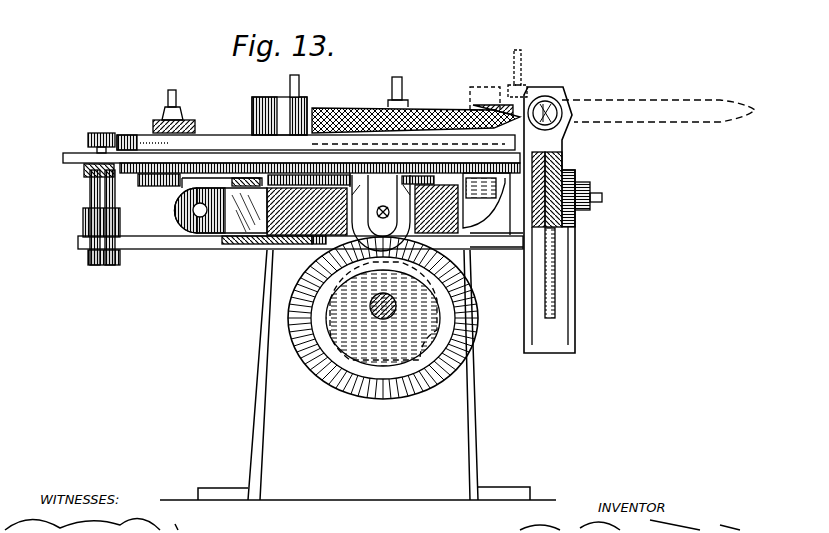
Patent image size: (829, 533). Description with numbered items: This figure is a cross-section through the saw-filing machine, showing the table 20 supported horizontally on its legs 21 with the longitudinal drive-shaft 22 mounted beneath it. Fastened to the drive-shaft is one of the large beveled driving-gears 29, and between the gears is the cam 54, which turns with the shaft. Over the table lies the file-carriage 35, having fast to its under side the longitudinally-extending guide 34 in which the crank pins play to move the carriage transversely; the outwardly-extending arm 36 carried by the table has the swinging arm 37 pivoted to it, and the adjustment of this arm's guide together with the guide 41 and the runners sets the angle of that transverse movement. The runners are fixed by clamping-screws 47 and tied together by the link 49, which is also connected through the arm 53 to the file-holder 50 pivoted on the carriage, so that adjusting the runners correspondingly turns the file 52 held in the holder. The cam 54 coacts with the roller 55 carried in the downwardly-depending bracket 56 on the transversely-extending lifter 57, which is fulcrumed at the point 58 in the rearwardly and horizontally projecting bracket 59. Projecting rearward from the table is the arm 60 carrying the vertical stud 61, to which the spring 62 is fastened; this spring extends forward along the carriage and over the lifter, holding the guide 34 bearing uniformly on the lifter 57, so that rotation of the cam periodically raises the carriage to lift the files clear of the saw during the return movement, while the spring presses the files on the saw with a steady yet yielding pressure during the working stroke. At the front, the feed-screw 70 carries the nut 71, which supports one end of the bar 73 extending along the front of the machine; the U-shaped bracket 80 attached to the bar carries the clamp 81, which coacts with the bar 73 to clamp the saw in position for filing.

The table 20 is at (268, 250).
The legs 21 is at (474, 418).
The drive-shaft 22 is at (385, 310).
The beveled driving-gear 29 is at (350, 334).
The guide 34 is at (245, 160).
The file-carriage 35 is at (203, 140).
The arm 36 is at (512, 252).
The swinging arm 37 is at (489, 246).
The guide 41 is at (157, 180).
The clamping-screw 47 is at (168, 95).
The link 49 is at (152, 118).
The file-holder 50 is at (277, 106).
The file 52 is at (434, 107).
The arm 53 is at (203, 132).
The cam 54 is at (330, 370).
The roller 55 is at (305, 270).
The bracket 56 is at (381, 213).
The lifter 57 is at (489, 195).
The fulcrum point 58 is at (194, 211).
The bracket 59 is at (228, 218).
The arm 60 is at (153, 252).
The stud 61 is at (100, 197).
The spring 62 is at (125, 178).
The feed-screw 70 is at (552, 108).
The nut 71 is at (568, 117).
The bar 73 is at (578, 226).
The U-shaped bracket 80 is at (570, 315).
The clamp 81 is at (562, 168).